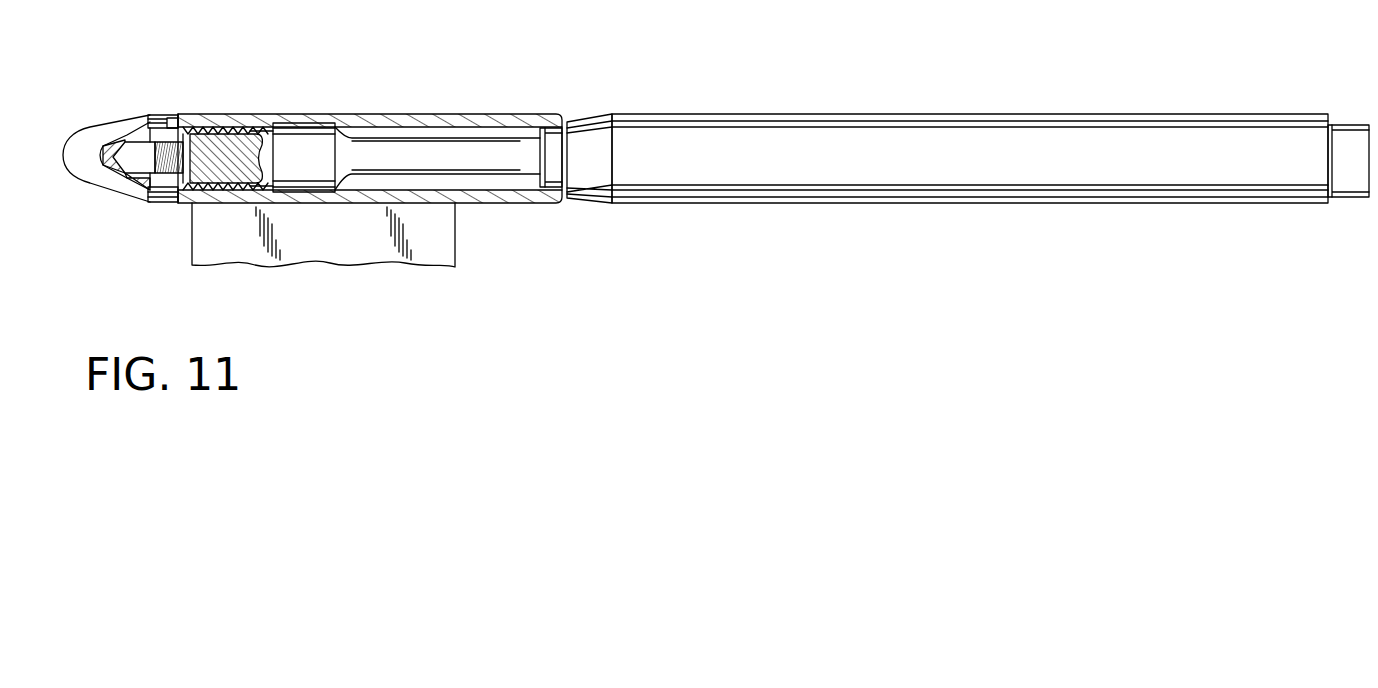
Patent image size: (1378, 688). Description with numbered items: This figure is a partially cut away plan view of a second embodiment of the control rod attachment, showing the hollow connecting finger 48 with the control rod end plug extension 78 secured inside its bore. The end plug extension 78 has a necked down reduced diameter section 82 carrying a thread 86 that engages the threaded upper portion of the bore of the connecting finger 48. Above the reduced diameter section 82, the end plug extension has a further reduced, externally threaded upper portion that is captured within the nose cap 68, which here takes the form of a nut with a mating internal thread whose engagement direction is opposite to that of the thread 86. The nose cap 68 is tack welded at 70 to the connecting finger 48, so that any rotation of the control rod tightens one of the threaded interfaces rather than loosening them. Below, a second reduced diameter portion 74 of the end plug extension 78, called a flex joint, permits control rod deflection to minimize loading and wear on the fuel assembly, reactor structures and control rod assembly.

The connecting finger 48 is at (497, 203).
The nose cap 68 is at (107, 128).
The tack weld 70 is at (173, 113).
The second reduced diameter portion 74 is at (457, 137).
The end plug extension 78 is at (1168, 203).
The reduced diameter section 82 is at (259, 111).
The thread 86 is at (220, 132).